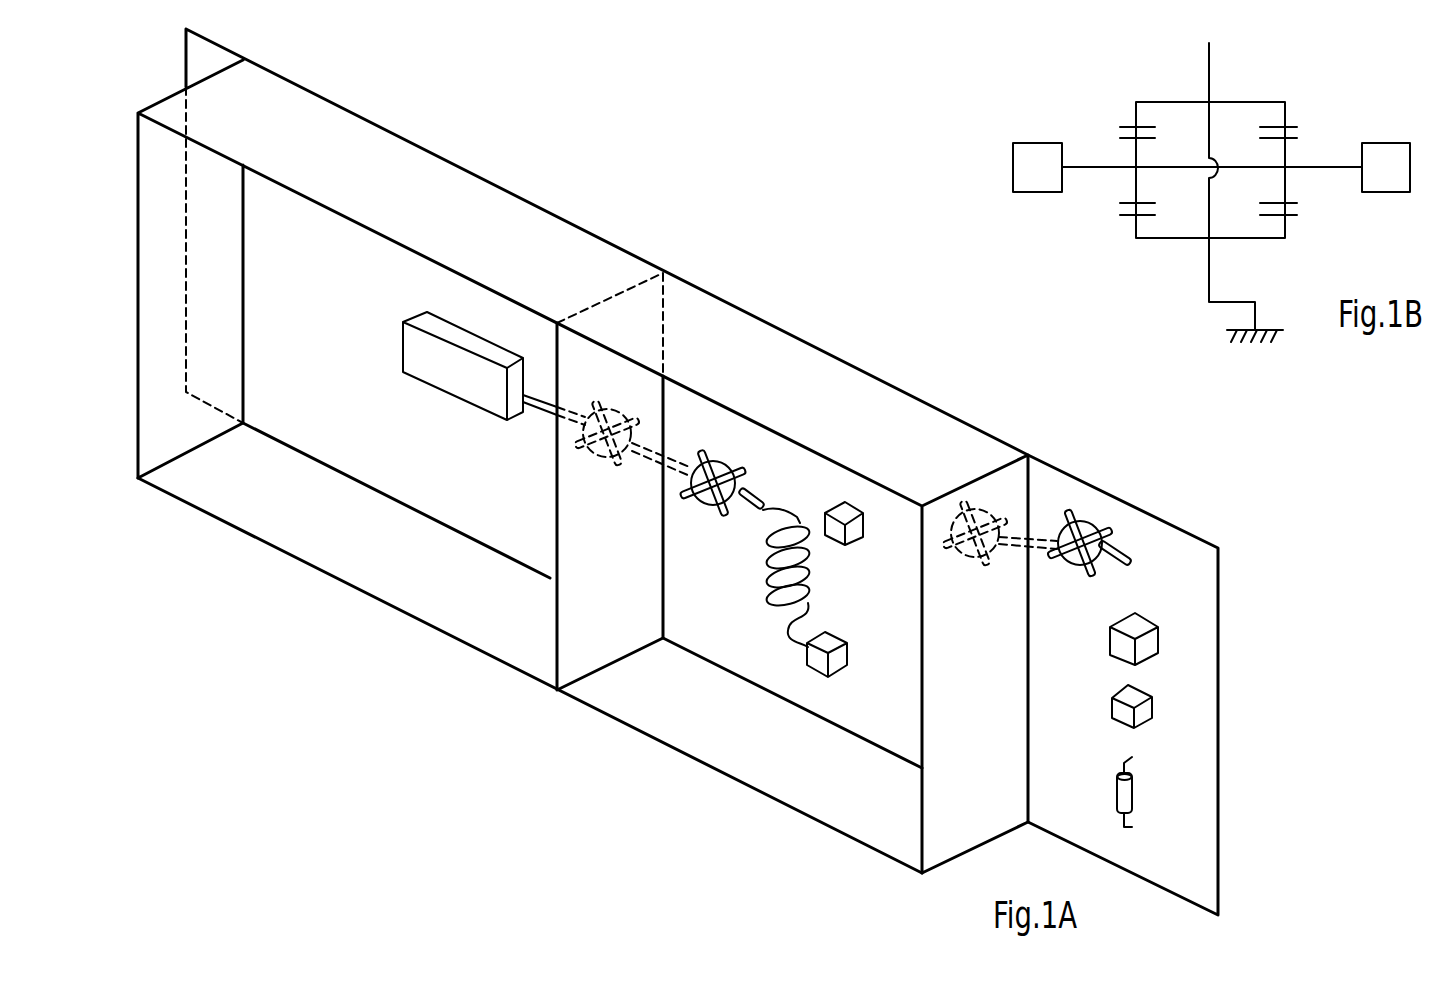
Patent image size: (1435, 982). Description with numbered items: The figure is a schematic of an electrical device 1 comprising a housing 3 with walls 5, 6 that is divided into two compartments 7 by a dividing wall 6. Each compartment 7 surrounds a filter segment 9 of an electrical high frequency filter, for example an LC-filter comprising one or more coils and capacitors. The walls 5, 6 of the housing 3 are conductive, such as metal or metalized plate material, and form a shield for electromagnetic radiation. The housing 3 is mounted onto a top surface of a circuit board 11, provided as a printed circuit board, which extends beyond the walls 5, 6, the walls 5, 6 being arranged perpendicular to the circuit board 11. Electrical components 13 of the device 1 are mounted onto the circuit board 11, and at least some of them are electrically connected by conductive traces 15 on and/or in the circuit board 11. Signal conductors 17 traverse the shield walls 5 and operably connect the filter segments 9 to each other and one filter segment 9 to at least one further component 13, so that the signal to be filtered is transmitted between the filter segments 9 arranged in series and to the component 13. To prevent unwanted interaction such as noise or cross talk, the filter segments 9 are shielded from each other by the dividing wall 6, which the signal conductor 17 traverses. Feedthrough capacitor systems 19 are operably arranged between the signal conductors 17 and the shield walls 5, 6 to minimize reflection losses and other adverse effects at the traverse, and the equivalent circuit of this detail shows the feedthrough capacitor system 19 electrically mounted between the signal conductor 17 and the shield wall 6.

In FIG. 1A, the electrical device 1 is at (532, 131).
In FIG. 1A, the housing 3 is at (163, 493).
In FIG. 1A, the walls 5 is at (277, 93).
In FIG. 1A, the dividing wall 6 is at (573, 633).
In FIG. 1B, the dividing wall 6 is at (1206, 73).
In FIG. 1A, the compartment 7 is at (277, 303).
In FIG. 1A, the filter segment 9 is at (470, 340).
In FIG. 1B, the filter segment 9 is at (1211, 167).
In FIG. 1A, the circuit board 11 is at (1200, 593).
In FIG. 1A, the components 13 is at (1133, 772).
In FIG. 1A, the conductive traces 15 is at (1120, 548).
In FIG. 1A, the signal conductor 17 is at (543, 397).
In FIG. 1B, the signal conductor 17 is at (1079, 170).
In FIG. 1A, the feedthrough capacitor system 19 is at (647, 527).
In FIG. 1B, the feedthrough capacitor system 19 is at (1211, 191).